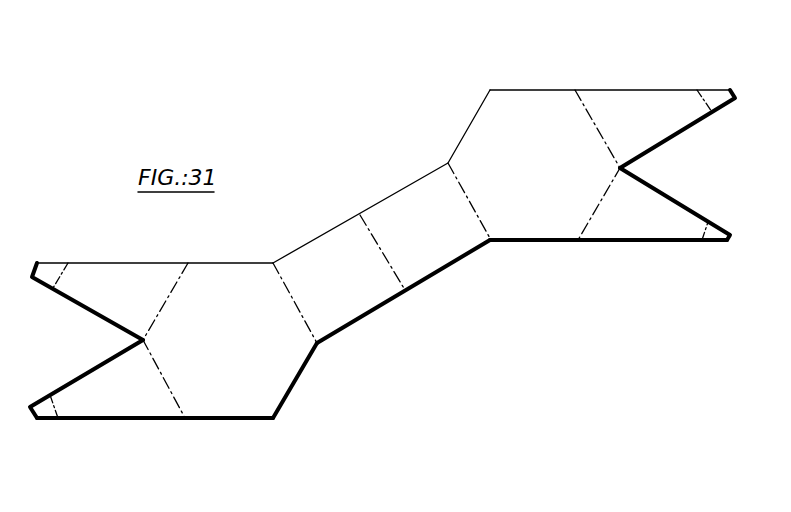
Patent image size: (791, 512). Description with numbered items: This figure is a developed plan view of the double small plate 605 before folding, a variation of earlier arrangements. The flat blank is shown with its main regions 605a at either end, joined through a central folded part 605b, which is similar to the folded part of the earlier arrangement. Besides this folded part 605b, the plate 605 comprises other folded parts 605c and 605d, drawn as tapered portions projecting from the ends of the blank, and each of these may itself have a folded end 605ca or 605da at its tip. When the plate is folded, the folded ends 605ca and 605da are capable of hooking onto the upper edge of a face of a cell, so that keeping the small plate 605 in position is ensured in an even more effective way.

The double small plate 605 is at (392, 204).
The hexagonal body portion 605a is at (287, 362).
The folded part 605b is at (408, 285).
The folded part 605c is at (125, 405).
The folded end 605ca is at (50, 412).
The folded part 605d is at (113, 277).
The folded end 605da is at (54, 272).